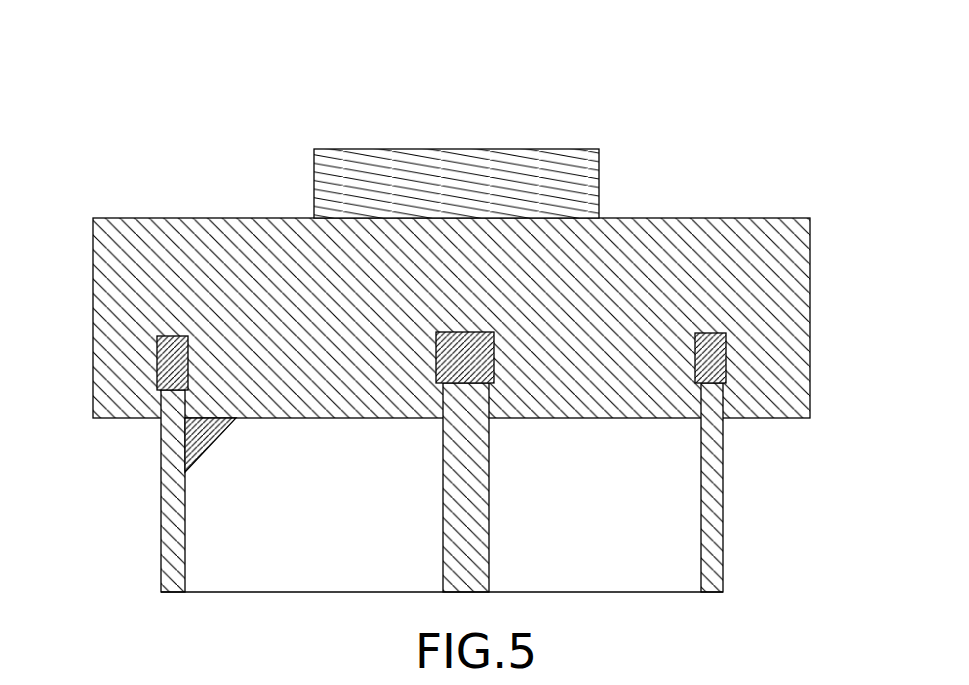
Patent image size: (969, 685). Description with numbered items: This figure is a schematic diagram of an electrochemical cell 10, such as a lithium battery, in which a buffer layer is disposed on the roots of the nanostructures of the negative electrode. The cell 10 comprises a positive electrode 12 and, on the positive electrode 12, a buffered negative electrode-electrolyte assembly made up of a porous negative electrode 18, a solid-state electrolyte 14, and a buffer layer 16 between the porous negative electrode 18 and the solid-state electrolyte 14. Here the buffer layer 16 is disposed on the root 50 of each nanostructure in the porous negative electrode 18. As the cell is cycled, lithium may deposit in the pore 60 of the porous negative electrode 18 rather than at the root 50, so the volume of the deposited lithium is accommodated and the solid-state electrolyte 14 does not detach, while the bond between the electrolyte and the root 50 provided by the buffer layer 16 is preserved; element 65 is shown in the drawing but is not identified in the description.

The electrochemical cell 10 is at (130, 98).
The positive electrode 12 is at (578, 179).
The solid-state electrolyte 14 is at (115, 259).
The buffer layer 16 is at (167, 358).
The porous negative electrode 18 is at (712, 541).
The root 50 is at (710, 387).
The pore 60 is at (240, 518).
The fillet 65 is at (195, 442).